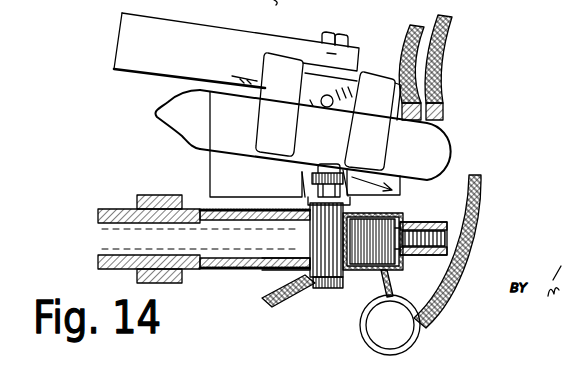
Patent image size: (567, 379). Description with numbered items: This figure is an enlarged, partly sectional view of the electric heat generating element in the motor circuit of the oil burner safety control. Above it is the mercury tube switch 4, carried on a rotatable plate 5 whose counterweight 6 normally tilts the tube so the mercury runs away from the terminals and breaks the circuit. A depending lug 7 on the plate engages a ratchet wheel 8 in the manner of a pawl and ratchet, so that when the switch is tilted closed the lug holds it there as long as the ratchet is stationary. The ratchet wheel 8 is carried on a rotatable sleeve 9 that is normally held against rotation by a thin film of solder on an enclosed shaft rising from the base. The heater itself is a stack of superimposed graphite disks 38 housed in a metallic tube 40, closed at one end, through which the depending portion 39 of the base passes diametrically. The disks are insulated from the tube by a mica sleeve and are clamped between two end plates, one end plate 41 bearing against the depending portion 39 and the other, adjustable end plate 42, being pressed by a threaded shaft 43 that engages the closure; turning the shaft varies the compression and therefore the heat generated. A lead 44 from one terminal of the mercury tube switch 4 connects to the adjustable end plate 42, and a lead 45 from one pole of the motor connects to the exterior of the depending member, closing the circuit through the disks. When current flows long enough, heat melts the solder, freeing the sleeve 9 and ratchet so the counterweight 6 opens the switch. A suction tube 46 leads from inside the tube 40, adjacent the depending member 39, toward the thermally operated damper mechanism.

The mercury tube switch 4 is at (424, 156).
The plate 5 is at (338, 91).
The counterweight 6 is at (130, 35).
The depending lug 7 is at (302, 173).
The ratchet wheel 8 is at (400, 187).
The rotatable sleeve 9 is at (315, 189).
The graphite disks 38 is at (360, 238).
The depending portion 39 is at (288, 265).
The metallic tube 40 is at (212, 270).
The end plate 41 is at (347, 270).
The adjustable end plate 42 is at (383, 232).
The threaded shaft 43 is at (440, 242).
The lead 44 is at (483, 228).
The lead 45 is at (305, 296).
The suction tube 46 is at (107, 208).